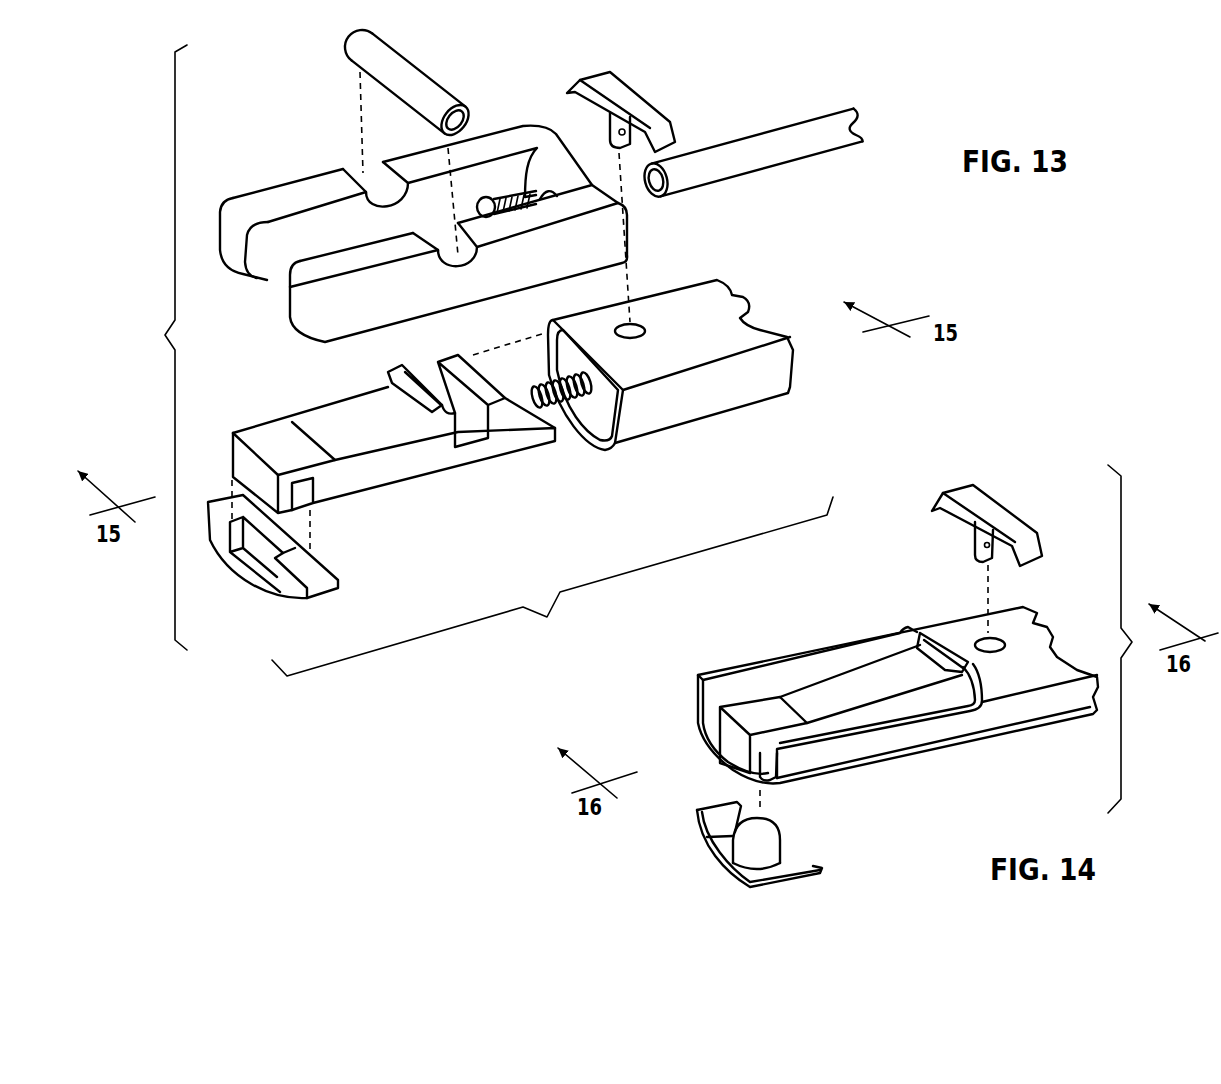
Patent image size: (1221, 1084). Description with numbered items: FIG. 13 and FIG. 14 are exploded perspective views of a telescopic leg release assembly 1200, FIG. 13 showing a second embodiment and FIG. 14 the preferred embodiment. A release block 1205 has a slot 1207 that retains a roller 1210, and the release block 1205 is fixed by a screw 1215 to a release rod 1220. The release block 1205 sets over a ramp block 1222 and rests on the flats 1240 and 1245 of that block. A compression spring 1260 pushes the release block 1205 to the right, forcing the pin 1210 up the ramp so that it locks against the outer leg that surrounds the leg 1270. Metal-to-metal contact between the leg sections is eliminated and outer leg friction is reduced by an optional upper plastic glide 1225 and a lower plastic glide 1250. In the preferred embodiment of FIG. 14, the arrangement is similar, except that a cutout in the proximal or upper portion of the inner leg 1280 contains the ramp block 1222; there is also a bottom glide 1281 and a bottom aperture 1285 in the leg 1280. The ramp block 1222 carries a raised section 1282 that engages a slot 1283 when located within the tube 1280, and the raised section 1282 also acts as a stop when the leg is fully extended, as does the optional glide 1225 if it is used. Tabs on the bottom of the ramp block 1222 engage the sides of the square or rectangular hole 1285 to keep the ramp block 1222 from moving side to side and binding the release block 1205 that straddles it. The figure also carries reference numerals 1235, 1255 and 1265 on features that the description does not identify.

In FIG. 13, the telescopic leg release assembly 1200 is at (160, 232).
In FIG. 13, the release block 1205 is at (500, 140).
In FIG. 13, the slot 1207 is at (357, 177).
In FIG. 13, the roller 1210 is at (397, 65).
In FIG. 13, the screw 1215 is at (532, 192).
In FIG. 13, the release rod 1220 is at (742, 143).
In FIG. 13, the ramp block 1222 is at (398, 487).
In FIG. 14, the ramp block 1222 is at (873, 680).
In FIG. 13, the upper plastic glide 1225 is at (617, 83).
In FIG. 14, the upper plastic glide 1225 is at (1008, 515).
In FIG. 13, the hole 1235 is at (633, 327).
In FIG. 13, the flat 1240 is at (270, 443).
In FIG. 13, the flat 1245 is at (525, 423).
In FIG. 13, the lower plastic glide 1250 is at (293, 590).
In FIG. 14, the hole 1255 is at (992, 643).
In FIG. 13, the compression spring 1260 is at (550, 410).
In FIG. 13, the curved surface 1265 is at (365, 415).
In FIG. 13, the leg 1270 is at (687, 430).
In FIG. 14, the inner leg 1280 is at (1007, 718).
In FIG. 14, the bottom glide 1281 is at (740, 871).
In FIG. 14, the raised section 1282 is at (937, 645).
In FIG. 14, the slot 1283 is at (988, 662).
In FIG. 14, the bottom aperture 1285 is at (757, 785).